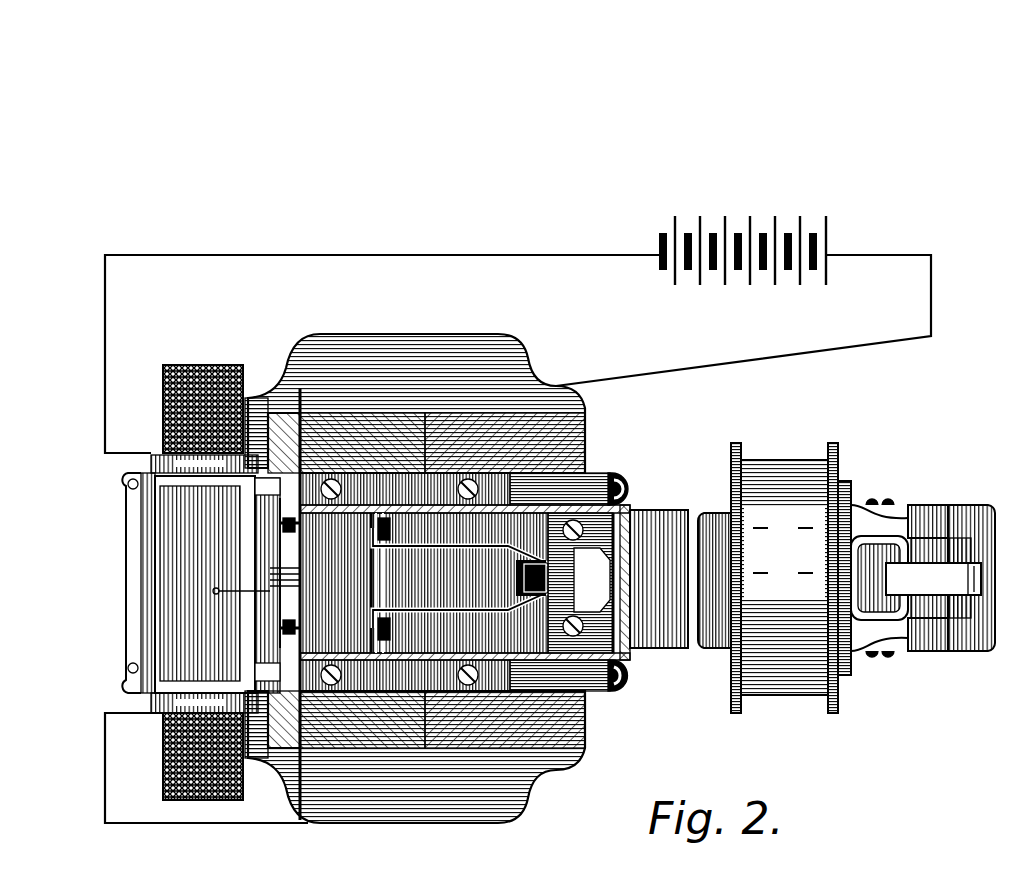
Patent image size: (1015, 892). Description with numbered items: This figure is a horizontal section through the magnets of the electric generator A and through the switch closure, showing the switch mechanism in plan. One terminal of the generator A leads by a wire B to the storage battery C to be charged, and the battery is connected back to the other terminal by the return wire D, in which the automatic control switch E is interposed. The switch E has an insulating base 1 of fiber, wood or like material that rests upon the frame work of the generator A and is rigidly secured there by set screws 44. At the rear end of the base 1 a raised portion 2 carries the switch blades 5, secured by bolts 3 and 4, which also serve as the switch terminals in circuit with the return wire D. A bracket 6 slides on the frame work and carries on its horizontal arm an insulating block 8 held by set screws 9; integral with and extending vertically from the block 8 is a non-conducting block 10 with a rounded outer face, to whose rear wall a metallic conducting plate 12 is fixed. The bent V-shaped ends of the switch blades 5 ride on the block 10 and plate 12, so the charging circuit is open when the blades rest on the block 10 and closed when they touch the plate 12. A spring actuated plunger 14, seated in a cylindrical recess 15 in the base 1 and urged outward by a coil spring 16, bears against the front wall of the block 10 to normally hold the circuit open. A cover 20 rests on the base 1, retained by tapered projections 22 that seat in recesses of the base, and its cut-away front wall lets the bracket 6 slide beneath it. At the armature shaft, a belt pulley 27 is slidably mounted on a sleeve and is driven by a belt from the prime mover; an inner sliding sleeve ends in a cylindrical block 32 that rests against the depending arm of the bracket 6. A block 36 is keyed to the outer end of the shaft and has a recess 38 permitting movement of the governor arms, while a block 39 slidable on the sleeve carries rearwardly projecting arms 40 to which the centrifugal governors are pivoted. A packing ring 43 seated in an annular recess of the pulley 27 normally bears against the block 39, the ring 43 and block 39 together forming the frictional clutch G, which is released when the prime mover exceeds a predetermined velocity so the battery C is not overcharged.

The base 1 is at (395, 692).
The raised portion 2 is at (335, 583).
The bolt 3 is at (288, 522).
The bolt 4 is at (283, 622).
The switch blades 5 is at (460, 583).
The bracket 6 is at (659, 579).
The insulating block 8 is at (621, 647).
The set screws 9 is at (613, 499).
The block 10 is at (505, 590).
The metallic conducting plate 12 is at (592, 581).
The spring actuated plunger 14 is at (500, 548).
The cylindrical recess 15 is at (510, 570).
The coil spring 16 is at (262, 572).
The cover 20 is at (505, 719).
The tapered projections 22 is at (426, 580).
The belt pulley 27 is at (784, 578).
The cylindrical block 32 is at (705, 596).
The block 36 is at (965, 512).
The recess 38 is at (972, 574).
The block 39 is at (838, 670).
The arms 40 is at (912, 532).
The packing ring 43 is at (880, 645).
The set screws 44 is at (452, 478).
The electric generator A is at (388, 808).
The wire B is at (352, 248).
The storage battery C is at (742, 234).
The return wire D is at (688, 374).
The automatic control switch E is at (878, 540).
The frictional clutch G is at (843, 478).